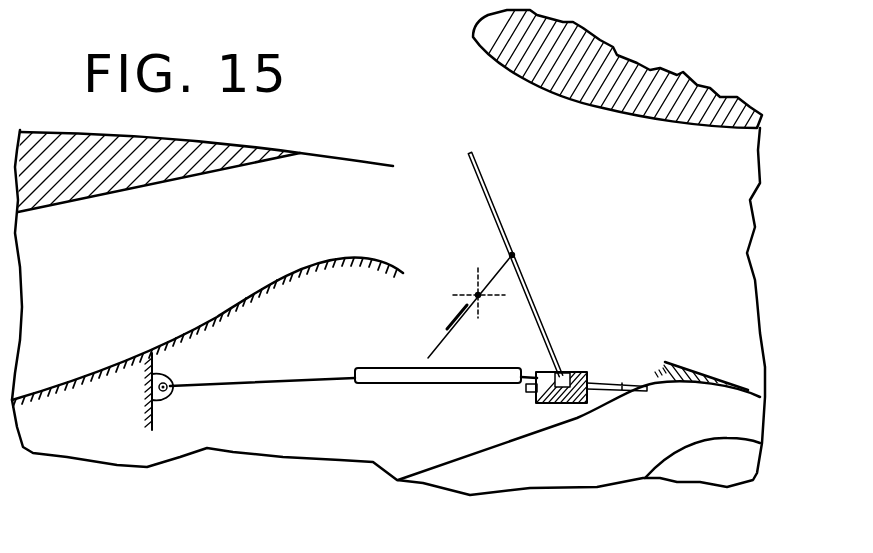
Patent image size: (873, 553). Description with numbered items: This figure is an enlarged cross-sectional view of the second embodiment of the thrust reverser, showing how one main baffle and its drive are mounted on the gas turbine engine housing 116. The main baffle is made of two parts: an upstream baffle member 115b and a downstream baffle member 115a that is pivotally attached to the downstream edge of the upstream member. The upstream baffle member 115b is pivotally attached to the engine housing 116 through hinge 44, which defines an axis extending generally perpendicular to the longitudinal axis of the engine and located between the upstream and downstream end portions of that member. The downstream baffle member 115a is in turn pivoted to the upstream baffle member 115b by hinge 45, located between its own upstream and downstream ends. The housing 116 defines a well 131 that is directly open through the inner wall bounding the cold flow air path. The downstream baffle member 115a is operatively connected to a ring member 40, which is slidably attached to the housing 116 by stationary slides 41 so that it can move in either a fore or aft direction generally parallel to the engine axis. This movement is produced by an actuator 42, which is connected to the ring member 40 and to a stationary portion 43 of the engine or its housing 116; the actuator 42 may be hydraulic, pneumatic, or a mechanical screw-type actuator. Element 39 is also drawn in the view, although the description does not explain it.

The gas turbine engine housing 116 is at (348, 258).
The downstream baffle member 115a is at (488, 193).
The upstream baffle member 115b is at (438, 344).
The hinge 45 is at (514, 254).
The hinge 44 is at (477, 294).
The well 131 is at (494, 310).
The pivot pin 39 is at (565, 372).
The ring member 40 is at (536, 398).
The stationary slides 41 is at (622, 397).
The actuator 42 is at (398, 384).
The stationary portion 43 is at (165, 396).